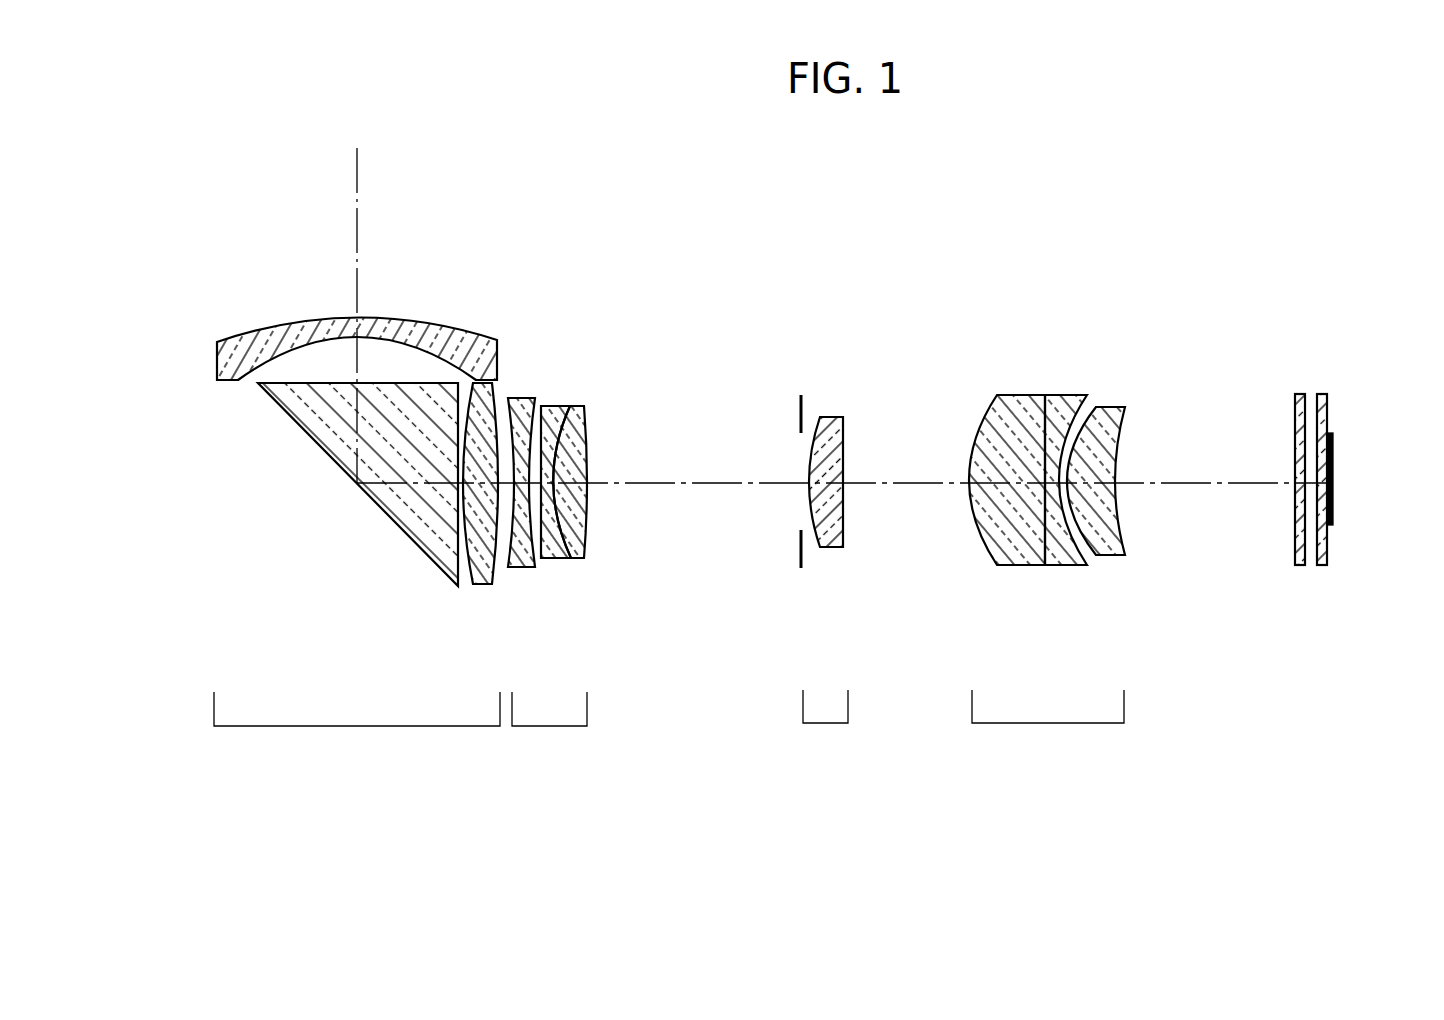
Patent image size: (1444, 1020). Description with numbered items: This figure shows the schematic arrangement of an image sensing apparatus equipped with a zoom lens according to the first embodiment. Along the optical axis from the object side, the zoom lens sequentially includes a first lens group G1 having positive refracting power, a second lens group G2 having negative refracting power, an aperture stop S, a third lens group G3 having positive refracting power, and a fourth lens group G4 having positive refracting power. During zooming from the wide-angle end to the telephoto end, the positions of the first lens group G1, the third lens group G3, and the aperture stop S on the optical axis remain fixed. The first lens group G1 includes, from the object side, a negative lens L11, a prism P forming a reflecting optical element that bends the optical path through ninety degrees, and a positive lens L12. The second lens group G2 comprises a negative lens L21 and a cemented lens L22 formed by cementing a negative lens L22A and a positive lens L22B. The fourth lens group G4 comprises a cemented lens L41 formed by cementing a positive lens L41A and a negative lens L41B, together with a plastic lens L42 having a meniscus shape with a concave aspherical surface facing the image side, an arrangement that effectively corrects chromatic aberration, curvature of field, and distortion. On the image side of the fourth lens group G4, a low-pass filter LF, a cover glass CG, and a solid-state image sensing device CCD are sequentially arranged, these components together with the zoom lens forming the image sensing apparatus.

The first lens group G1 is at (312, 542).
The second lens group G2 is at (608, 519).
The third lens group G3 is at (825, 591).
The fourth lens group G4 is at (1078, 518).
The negative lens L11 is at (217, 356).
The prism P is at (302, 427).
The positive lens L12 is at (486, 585).
The negative lens L21 is at (523, 398).
The cemented lens L22 is at (548, 318).
The negative lens L22A is at (555, 406).
The positive lens L22B is at (580, 406).
The aperture stop S is at (801, 407).
The cemented lens L41 is at (962, 317).
The positive lens L41A is at (1015, 395).
The negative lens L41B is at (1062, 395).
The plastic lens L42 is at (1113, 407).
The low-pass filter LF is at (1298, 394).
The cover glass CG is at (1322, 394).
The solid-state image sensing device CCD is at (1333, 455).